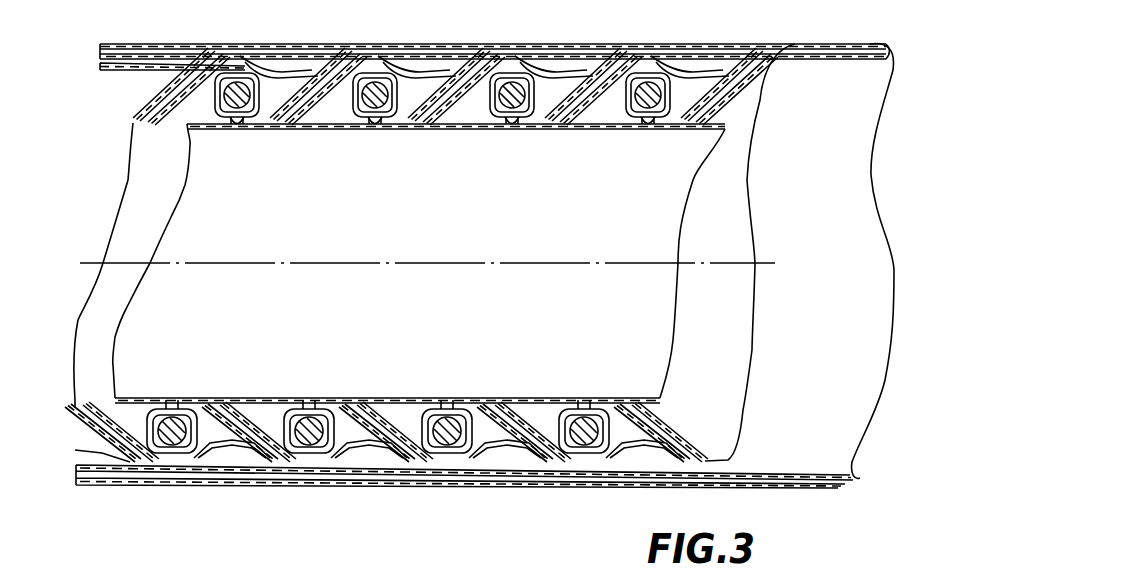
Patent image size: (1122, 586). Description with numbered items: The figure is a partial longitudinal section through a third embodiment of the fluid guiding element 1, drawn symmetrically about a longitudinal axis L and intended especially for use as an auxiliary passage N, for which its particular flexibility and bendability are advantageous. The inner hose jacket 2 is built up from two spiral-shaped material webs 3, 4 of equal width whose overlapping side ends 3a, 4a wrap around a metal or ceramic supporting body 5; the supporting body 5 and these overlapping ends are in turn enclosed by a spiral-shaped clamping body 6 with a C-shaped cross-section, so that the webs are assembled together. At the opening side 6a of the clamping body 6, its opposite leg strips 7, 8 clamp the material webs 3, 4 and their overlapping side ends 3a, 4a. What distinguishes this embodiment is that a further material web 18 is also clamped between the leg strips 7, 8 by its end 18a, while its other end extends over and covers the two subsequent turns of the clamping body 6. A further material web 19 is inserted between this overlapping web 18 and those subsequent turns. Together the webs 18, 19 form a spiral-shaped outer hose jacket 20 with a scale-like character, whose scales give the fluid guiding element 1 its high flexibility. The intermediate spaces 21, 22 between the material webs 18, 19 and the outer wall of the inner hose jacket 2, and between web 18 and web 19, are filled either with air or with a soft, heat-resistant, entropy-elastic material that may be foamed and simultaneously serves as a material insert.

The fluid guiding element 1 is at (165, 503).
The inner hose jacket 2 is at (207, 130).
The material web 3 is at (223, 356).
The overlapping side end 3a is at (290, 356).
The material web 4 is at (392, 356).
The overlapping side end 4a is at (353, 356).
The supporting body 5 is at (378, 92).
The clamping body 6 is at (444, 85).
The opening side 6a is at (377, 133).
The leg strip 7 is at (368, 126).
The leg strip 8 is at (418, 128).
The further material web 18 is at (142, 107).
The end of further material web 18a is at (423, 128).
The further material web 19 is at (281, 85).
The outer hose jacket 20 is at (790, 41).
The intermediate space 21 is at (333, 107).
The intermediate space 22 is at (345, 88).
The longitudinal axis L is at (520, 258).
The auxiliary passage N is at (340, 515).